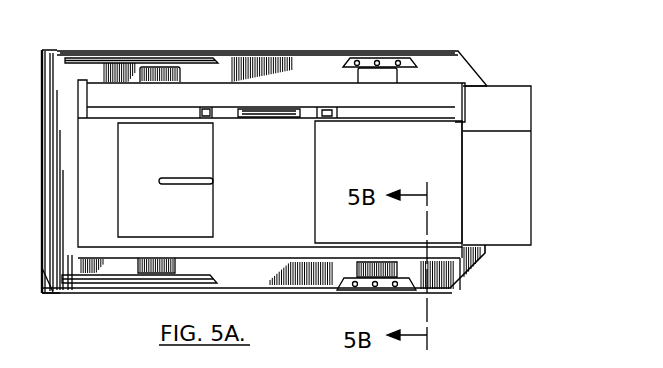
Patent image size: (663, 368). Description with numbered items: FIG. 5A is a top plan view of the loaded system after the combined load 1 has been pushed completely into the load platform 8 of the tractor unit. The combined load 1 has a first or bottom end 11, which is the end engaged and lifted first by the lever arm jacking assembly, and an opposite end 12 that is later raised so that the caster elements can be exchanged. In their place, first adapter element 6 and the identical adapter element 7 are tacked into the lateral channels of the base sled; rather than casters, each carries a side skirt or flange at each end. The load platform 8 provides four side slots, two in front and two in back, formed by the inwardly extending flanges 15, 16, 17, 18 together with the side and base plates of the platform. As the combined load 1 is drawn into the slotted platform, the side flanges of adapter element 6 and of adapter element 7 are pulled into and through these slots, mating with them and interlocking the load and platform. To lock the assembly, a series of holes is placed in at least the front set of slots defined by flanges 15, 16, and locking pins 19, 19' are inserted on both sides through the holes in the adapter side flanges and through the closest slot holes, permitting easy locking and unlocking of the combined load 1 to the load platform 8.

The combined load 1 is at (526, 81).
The first adapter element 6 is at (167, 72).
The adapter element 7 is at (380, 78).
The load platform 8 is at (245, 49).
The bottom end 11 is at (517, 200).
The other end 12 is at (77, 197).
The inwardly extending flange 15 is at (348, 58).
The inwardly extending flange 16 is at (343, 285).
The inwardly extending flange 17 is at (125, 60).
The inwardly extending flange 18 is at (128, 280).
The locking pin 19 is at (393, 302).
The locking pin 19' is at (375, 42).